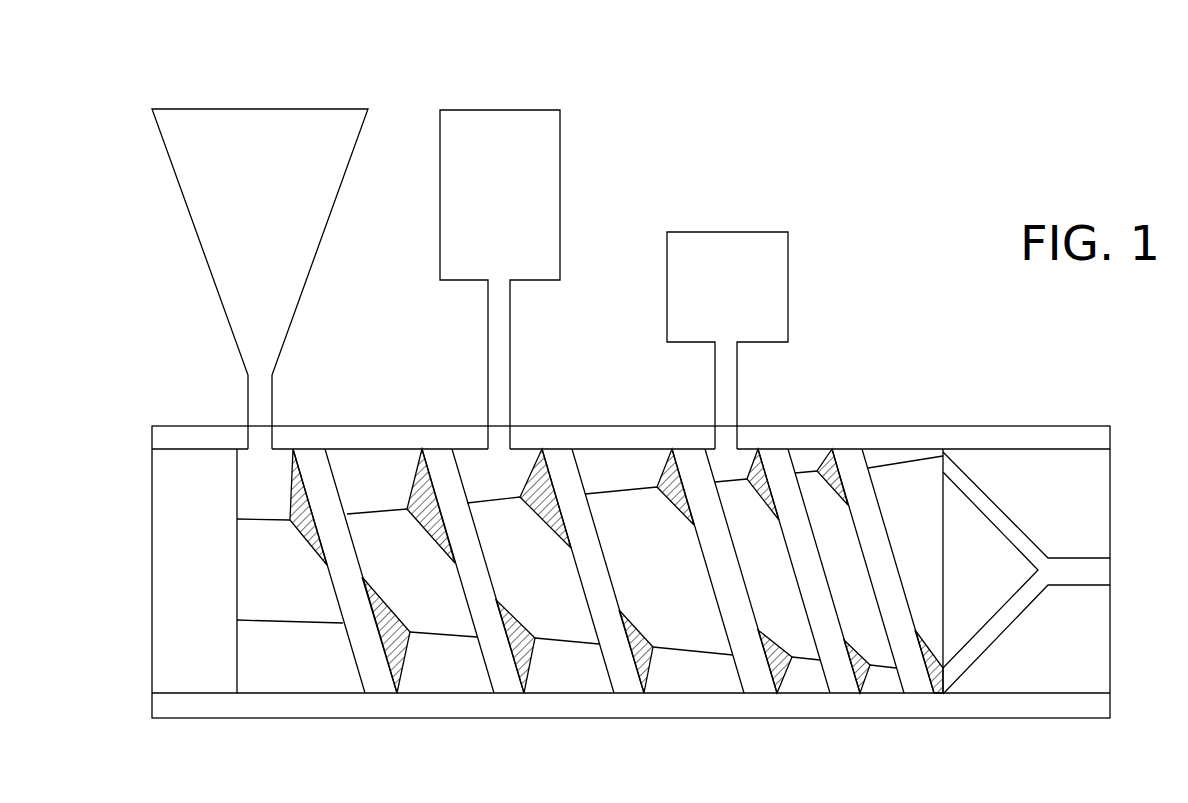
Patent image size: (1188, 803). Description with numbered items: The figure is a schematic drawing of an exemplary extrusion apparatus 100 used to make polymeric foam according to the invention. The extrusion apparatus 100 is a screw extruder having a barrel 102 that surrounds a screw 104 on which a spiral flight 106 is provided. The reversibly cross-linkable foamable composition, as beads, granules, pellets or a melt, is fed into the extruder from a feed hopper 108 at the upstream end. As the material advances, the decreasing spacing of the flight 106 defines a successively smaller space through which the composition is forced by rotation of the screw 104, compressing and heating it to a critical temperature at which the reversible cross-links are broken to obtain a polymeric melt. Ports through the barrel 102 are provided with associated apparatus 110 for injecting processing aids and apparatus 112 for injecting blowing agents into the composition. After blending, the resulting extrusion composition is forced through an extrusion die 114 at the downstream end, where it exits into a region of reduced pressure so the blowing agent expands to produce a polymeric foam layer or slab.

The extrusion apparatus 100 is at (1043, 86).
The barrel 102 is at (300, 425).
The screw 104 is at (900, 487).
The spiral flight 106 is at (465, 485).
The feed hopper 108 is at (330, 165).
The processing aid injection apparatus 110 is at (542, 205).
The blowing agent injection apparatus 112 is at (778, 278).
The extrusion die 114 is at (1035, 497).